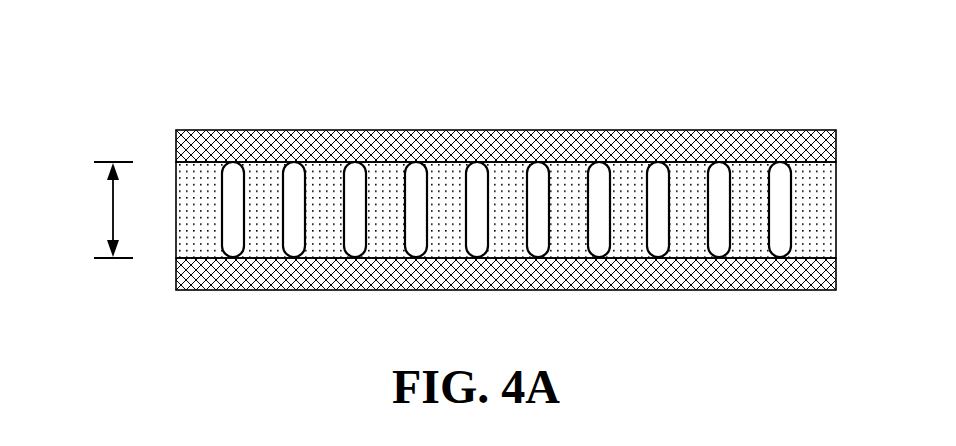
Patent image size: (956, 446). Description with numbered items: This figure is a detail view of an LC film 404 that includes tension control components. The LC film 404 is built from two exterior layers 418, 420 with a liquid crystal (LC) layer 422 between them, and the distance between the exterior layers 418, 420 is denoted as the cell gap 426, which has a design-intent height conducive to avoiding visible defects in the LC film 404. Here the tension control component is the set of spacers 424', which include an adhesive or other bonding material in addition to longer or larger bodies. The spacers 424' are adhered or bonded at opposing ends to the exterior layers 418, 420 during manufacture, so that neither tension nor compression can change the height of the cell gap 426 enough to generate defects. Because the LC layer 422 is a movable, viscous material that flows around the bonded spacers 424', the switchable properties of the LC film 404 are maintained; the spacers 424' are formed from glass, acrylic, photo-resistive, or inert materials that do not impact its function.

The LC film 404 is at (110, 85).
The exterior layer 418 is at (837, 147).
The exterior layer 420 is at (837, 276).
The liquid crystal (LC) layer 422 is at (837, 213).
The spacers 424' is at (506, 136).
The cell gap 426 is at (113, 205).